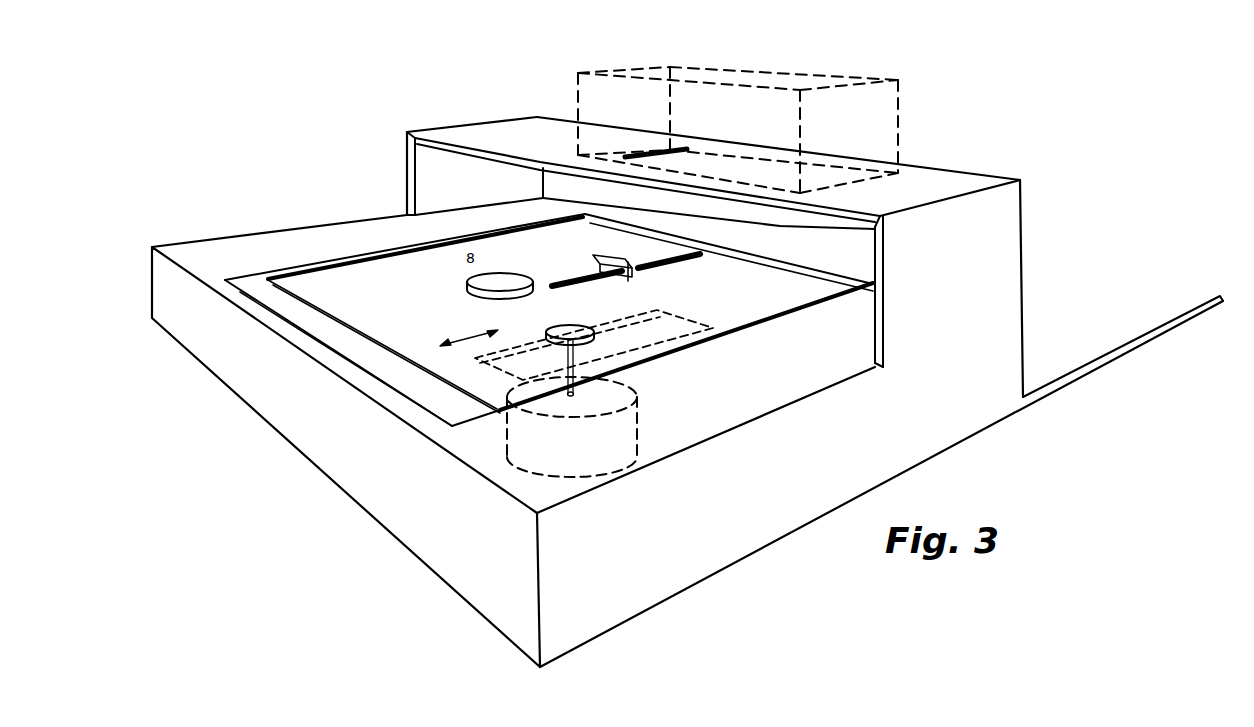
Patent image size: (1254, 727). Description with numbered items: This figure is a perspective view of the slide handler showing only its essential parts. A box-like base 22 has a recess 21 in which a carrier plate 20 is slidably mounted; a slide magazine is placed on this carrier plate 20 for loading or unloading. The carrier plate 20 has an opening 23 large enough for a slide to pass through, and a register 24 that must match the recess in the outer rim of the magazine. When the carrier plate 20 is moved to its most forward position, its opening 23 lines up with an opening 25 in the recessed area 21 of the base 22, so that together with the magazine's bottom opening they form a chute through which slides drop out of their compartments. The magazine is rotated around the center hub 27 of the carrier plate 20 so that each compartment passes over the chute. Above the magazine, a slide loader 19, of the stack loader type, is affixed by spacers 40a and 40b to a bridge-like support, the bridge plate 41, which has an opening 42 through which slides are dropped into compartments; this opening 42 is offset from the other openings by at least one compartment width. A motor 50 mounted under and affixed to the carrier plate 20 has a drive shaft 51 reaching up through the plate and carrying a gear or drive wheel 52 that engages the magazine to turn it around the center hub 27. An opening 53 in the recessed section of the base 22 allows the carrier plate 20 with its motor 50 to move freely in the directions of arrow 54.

The slide loader 19 is at (890, 90).
The carrier plate 20 is at (325, 281).
The recess 21 is at (263, 288).
The base 22 is at (637, 583).
The opening 23 is at (562, 278).
The register 24 is at (602, 254).
The opening 25 is at (672, 266).
The center hub 27 is at (472, 291).
The spacer 40a is at (443, 170).
The spacer 40b is at (997, 228).
The bridge plate 41 is at (495, 128).
The opening 42 is at (672, 150).
The motor 50 is at (622, 430).
The motor drive shaft 51 is at (578, 352).
The drive wheel 52 is at (558, 328).
The opening 53 is at (655, 332).
The arrow 54 is at (468, 336).